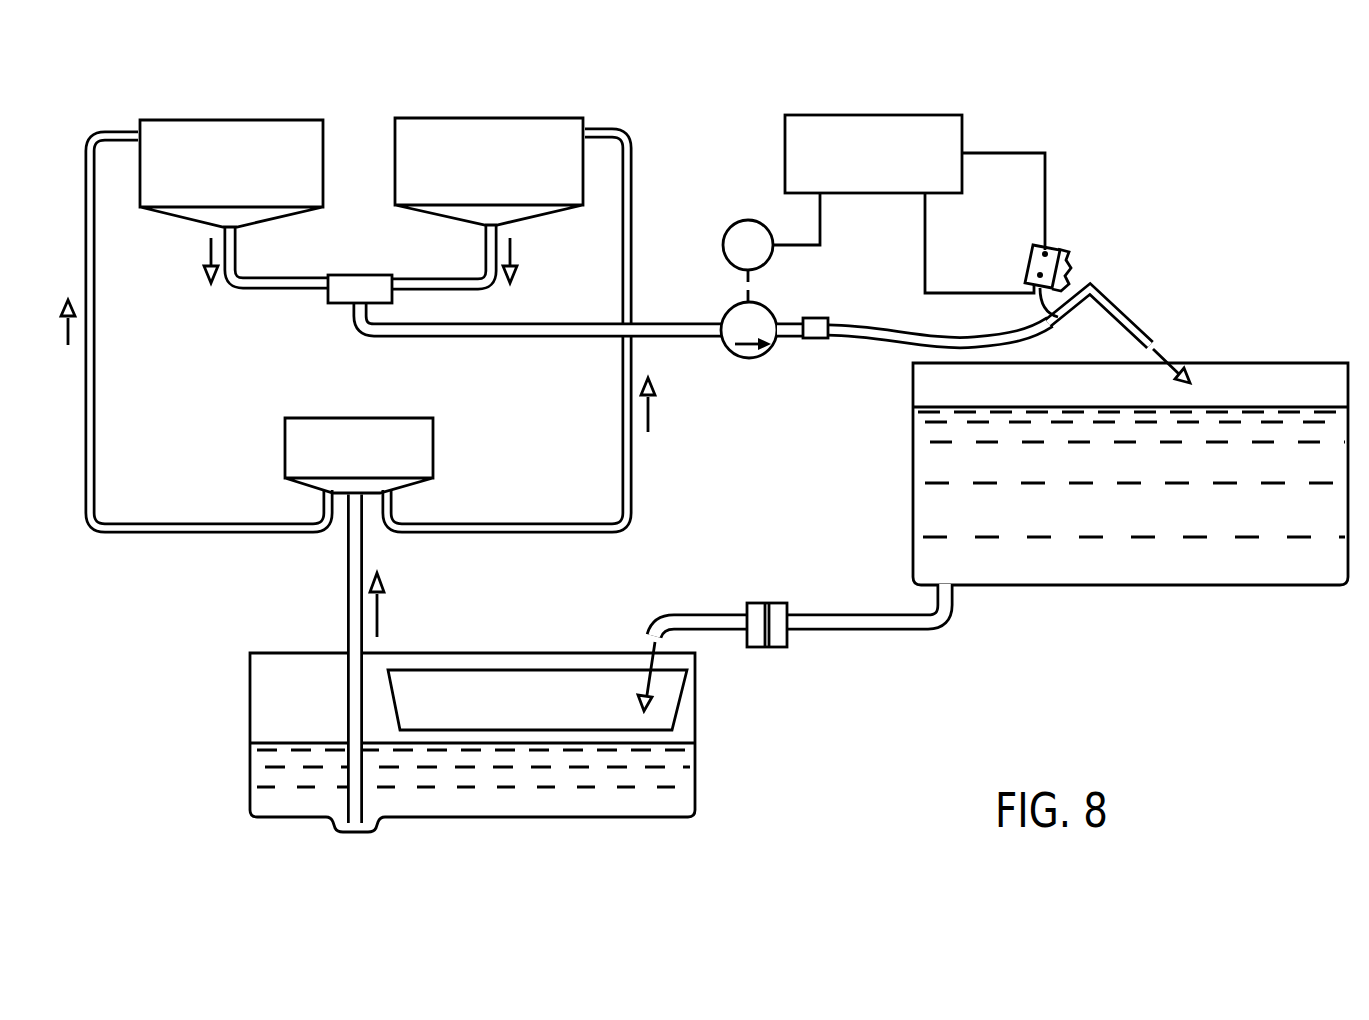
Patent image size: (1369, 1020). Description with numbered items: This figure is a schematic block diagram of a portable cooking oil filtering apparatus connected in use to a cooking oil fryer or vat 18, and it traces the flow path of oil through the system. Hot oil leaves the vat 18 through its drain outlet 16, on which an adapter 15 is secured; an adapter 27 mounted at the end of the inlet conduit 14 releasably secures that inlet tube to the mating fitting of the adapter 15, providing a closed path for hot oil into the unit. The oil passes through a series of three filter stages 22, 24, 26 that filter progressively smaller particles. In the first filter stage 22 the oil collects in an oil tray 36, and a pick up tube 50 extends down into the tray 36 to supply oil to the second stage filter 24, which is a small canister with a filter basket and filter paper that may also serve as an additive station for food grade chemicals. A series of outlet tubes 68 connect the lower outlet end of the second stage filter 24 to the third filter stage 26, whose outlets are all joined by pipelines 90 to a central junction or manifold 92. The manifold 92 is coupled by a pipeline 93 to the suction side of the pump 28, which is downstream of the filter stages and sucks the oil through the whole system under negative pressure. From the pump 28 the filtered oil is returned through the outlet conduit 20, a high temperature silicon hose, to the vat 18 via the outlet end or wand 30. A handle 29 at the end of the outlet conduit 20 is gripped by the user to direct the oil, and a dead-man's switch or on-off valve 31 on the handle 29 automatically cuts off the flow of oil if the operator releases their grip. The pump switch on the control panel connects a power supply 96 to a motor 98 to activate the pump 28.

The inlet conduit 14 is at (683, 613).
The adapter 15 is at (775, 647).
The drain outlet 16 is at (955, 600).
The cooking oil fryer or vat 18 is at (913, 427).
The outlet conduit 20 is at (848, 323).
The first filter stage 22 is at (250, 717).
The second stage filter 24 is at (354, 418).
The third filter stage 26 is at (402, 118).
The adapter 27 is at (757, 603).
The pump 28 is at (722, 312).
The handle 29 is at (1068, 258).
The outlet end or wand 30 is at (1128, 314).
The dead-man's switch or on-off valve 31 is at (1033, 255).
The oil tray 36 is at (492, 672).
The pick up tube 50 is at (350, 568).
The outlet tubes 68 is at (97, 352).
The pipelines 90 is at (298, 290).
The central junction or manifold 92 is at (345, 275).
The pipeline 93 is at (428, 337).
The power supply 96 is at (785, 139).
The motor 98 is at (731, 228).